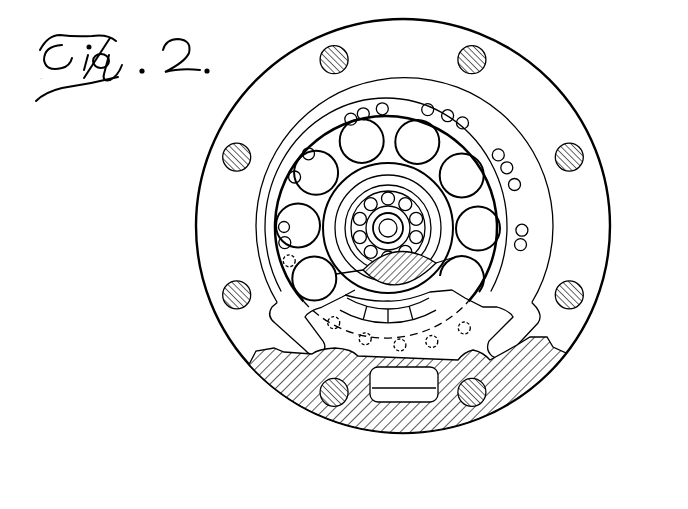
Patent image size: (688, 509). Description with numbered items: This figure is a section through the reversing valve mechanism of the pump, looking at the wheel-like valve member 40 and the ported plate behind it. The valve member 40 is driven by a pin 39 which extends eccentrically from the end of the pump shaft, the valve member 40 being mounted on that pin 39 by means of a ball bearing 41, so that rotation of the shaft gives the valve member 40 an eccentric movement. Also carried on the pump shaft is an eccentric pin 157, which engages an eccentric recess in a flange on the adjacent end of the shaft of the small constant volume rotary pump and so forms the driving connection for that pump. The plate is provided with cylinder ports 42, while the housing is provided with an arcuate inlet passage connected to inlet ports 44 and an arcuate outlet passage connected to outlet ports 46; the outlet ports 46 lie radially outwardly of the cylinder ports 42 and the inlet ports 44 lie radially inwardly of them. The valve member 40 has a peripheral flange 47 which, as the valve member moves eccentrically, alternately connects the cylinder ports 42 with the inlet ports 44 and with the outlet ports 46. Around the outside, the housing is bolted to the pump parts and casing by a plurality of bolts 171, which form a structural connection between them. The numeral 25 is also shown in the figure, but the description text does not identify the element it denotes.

The housing 25 is at (257, 352).
The pin 39 is at (396, 228).
The wheel-like valve member 40 is at (490, 140).
The ball bearing 41 is at (413, 205).
The cylinder ports 42 is at (512, 170).
The inlet ports 44 is at (460, 297).
The outlet ports 46 is at (396, 389).
The peripheral flange 47 is at (473, 128).
The eccentric pin 157 is at (385, 225).
The bolts 171 is at (485, 53).